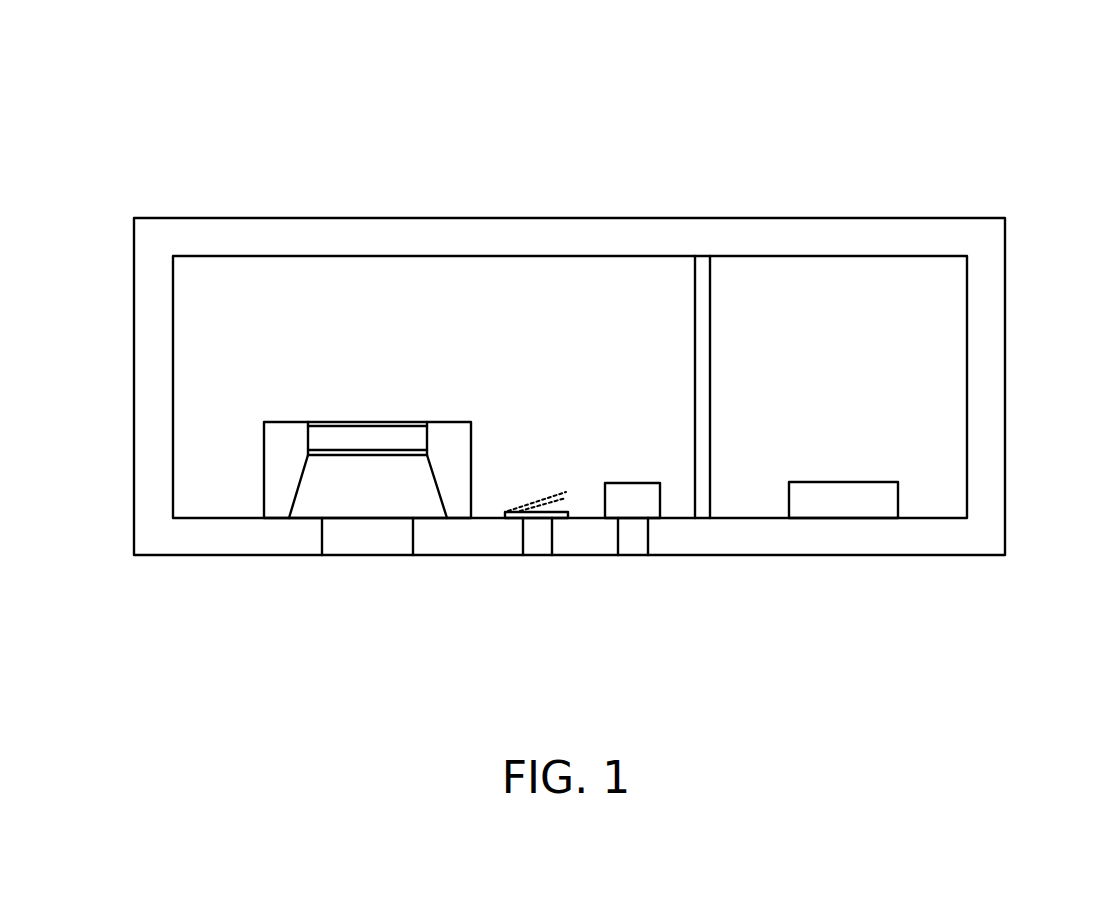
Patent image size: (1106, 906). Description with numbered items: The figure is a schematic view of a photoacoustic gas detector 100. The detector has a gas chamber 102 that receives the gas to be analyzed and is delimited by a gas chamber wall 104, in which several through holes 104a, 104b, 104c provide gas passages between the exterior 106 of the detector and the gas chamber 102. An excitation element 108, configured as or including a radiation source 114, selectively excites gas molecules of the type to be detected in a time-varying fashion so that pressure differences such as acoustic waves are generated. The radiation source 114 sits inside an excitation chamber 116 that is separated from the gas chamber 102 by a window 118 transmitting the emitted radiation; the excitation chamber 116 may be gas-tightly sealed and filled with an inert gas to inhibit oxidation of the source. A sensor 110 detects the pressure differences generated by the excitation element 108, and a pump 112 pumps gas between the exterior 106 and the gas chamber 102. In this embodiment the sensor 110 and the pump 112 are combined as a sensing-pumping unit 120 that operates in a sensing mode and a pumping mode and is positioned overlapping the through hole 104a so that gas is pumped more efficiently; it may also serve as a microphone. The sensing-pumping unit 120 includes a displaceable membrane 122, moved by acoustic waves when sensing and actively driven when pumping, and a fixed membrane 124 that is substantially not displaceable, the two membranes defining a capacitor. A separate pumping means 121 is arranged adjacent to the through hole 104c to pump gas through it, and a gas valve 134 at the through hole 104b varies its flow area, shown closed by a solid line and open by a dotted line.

The photoacoustic gas detector 100 is at (943, 130).
The gas chamber 102 is at (263, 285).
The gas chamber wall 104 is at (440, 232).
The through hole 104a is at (342, 547).
The through hole 104b is at (535, 547).
The through hole 104c is at (634, 543).
The exterior 106 is at (168, 643).
The excitation element 108 is at (912, 494).
The sensor 110 is at (240, 472).
The pump 112 is at (242, 493).
The radiation source 114 is at (863, 491).
The excitation chamber 116 is at (925, 333).
The window 118 is at (702, 269).
The sensing-pumping unit 120 is at (232, 437).
The pumping means 121 is at (652, 507).
The displaceable membrane 122 is at (317, 455).
The fixed membrane 124 is at (330, 422).
The gas valve 134 is at (560, 518).